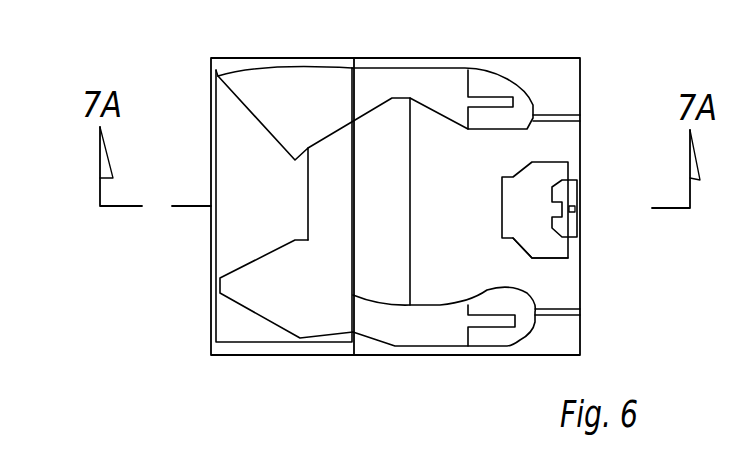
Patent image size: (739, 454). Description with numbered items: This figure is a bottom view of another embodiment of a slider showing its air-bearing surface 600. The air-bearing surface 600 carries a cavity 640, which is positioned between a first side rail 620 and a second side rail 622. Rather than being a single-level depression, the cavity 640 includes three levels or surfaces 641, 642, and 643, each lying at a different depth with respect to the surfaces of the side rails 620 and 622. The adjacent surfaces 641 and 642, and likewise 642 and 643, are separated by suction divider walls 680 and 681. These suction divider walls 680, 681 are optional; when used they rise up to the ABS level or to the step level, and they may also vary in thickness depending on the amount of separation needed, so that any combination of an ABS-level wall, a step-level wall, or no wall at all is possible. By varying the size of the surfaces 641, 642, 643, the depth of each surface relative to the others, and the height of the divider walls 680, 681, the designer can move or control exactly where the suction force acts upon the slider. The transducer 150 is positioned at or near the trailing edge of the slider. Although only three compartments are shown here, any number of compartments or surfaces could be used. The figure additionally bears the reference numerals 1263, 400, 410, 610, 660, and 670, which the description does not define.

The section line 7A-7A 1263 is at (110, 56).
The light guide 400 is at (337, 157).
The inner frame 660 is at (212, 230).
The first cavity surface 641 is at (330, 216).
The cavity 640 is at (343, 255).
The suction divider wall 680 is at (355, 143).
The suction divider wall 681 is at (410, 187).
The second cavity surface 642 is at (398, 138).
The first side rail 620 is at (438, 78).
The second side rail 622 is at (422, 337).
The third cavity surface 643 is at (462, 152).
The lower lead wire 670 is at (580, 302).
The lamp holder 410 is at (540, 170).
The transducer 150 is at (580, 208).
The holder base 610 is at (560, 247).
The air-bearing surface 600 is at (567, 330).